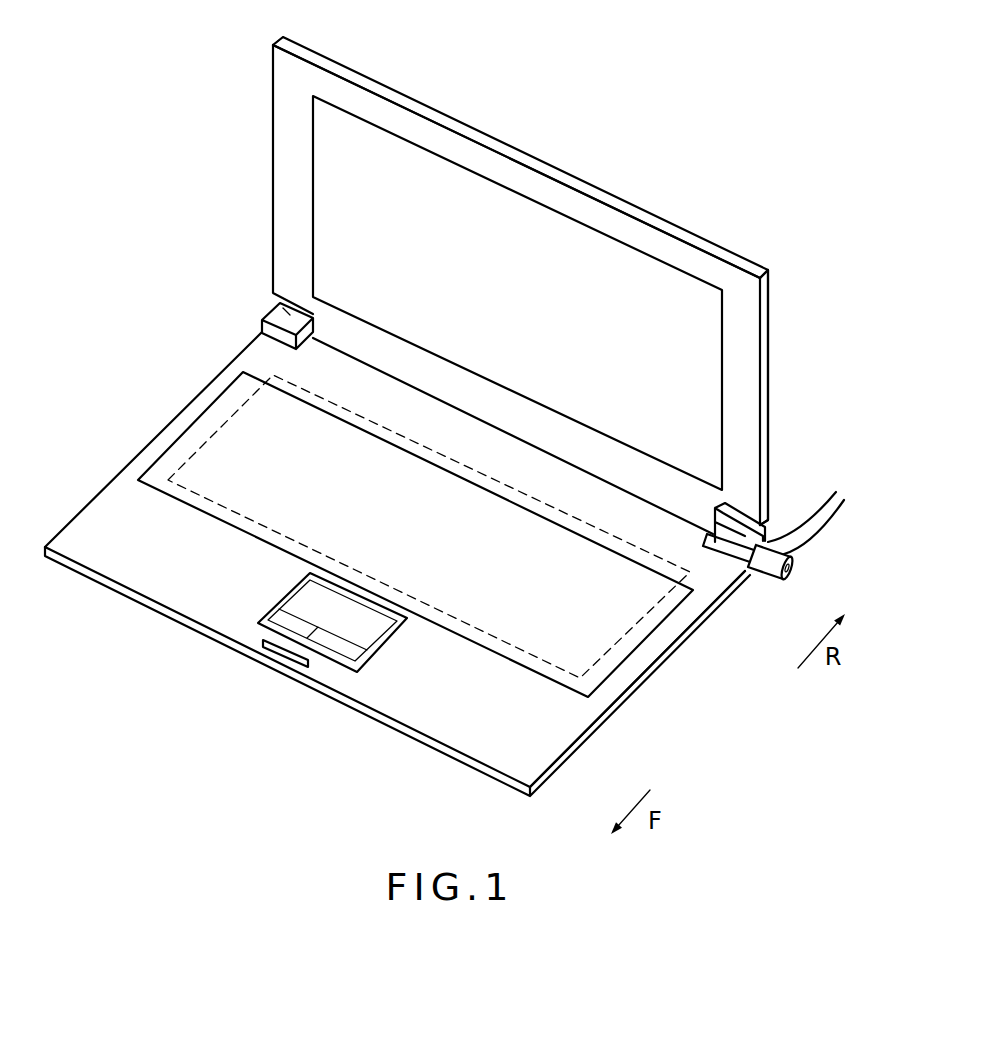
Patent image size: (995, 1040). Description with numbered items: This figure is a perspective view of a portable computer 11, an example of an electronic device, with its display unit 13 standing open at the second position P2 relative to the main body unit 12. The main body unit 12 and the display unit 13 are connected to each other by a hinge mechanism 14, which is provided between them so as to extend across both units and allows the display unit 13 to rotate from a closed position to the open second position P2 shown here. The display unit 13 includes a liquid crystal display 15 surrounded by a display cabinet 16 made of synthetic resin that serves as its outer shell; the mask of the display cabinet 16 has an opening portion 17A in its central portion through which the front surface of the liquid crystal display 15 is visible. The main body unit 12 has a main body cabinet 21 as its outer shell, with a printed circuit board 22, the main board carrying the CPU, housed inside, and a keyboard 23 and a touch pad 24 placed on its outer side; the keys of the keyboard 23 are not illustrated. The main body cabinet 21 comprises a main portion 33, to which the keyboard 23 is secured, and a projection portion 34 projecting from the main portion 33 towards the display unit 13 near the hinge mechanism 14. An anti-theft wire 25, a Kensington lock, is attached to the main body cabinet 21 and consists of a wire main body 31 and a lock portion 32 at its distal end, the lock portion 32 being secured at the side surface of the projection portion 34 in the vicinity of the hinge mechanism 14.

The portable computer 11 is at (485, 268).
The main body unit 12 is at (398, 562).
The display unit 13 is at (256, 160).
The hinge mechanism 14 is at (501, 401).
The liquid crystal display 15 is at (620, 260).
The display cabinet 16 is at (758, 262).
The opening portion 17A is at (562, 210).
The main body cabinet 21 is at (108, 508).
The printed circuit board 22 is at (205, 437).
The keyboard 23 is at (607, 623).
The touch pad 24 is at (308, 597).
The anti-theft wire 25 is at (797, 568).
The wire main body 31 is at (836, 522).
The lock portion 32 is at (763, 582).
The main portion 33 is at (687, 610).
The projection portion 34 is at (310, 314).
The second position P2 is at (240, 52).